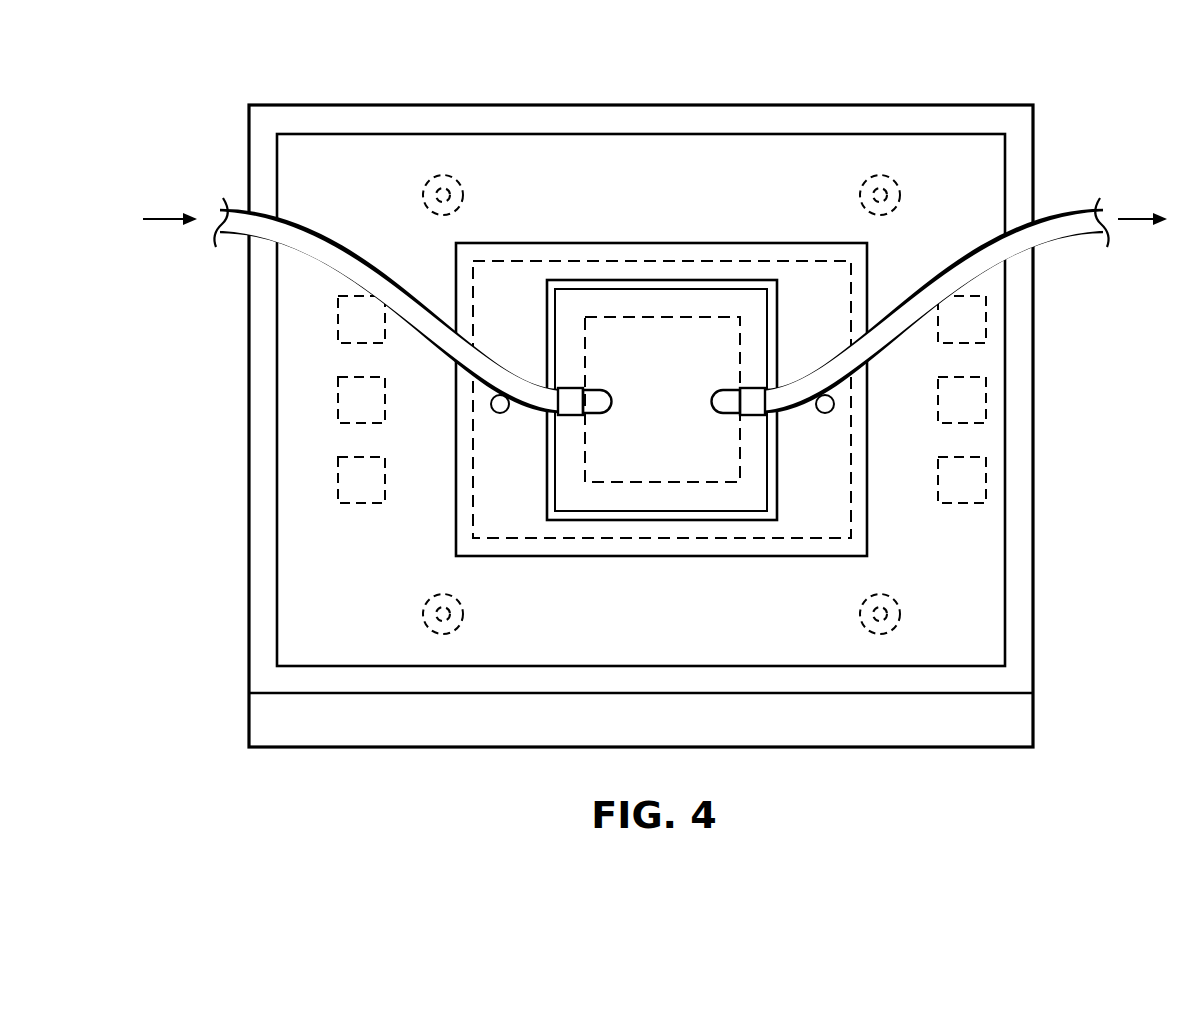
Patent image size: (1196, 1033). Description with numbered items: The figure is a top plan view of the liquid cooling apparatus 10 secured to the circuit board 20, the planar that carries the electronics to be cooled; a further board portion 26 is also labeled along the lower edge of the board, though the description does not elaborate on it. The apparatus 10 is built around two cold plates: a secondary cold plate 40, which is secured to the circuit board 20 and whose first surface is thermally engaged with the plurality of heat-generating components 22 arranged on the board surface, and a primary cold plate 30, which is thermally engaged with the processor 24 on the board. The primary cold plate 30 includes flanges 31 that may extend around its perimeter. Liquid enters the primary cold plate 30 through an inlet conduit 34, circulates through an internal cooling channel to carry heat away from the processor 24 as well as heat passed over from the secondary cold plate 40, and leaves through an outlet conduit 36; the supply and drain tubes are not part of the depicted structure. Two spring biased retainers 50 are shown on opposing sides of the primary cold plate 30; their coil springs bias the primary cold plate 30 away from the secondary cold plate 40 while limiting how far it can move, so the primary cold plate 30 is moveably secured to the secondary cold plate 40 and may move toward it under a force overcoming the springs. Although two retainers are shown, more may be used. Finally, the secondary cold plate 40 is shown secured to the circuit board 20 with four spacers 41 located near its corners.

The liquid cooling apparatus 10 is at (768, 130).
The circuit board 20 is at (930, 105).
The heat-generating components 22 is at (338, 312).
The processor 24 is at (661, 318).
The base 26 is at (1022, 720).
The primary cold plate 30 is at (662, 399).
The flanges 31 is at (660, 258).
The inlet conduit 34 is at (566, 388).
The outlet conduit 36 is at (757, 388).
The secondary cold plate 40 is at (553, 134).
The spacers 41 is at (423, 203).
The spring biased retainers 50 is at (500, 413).